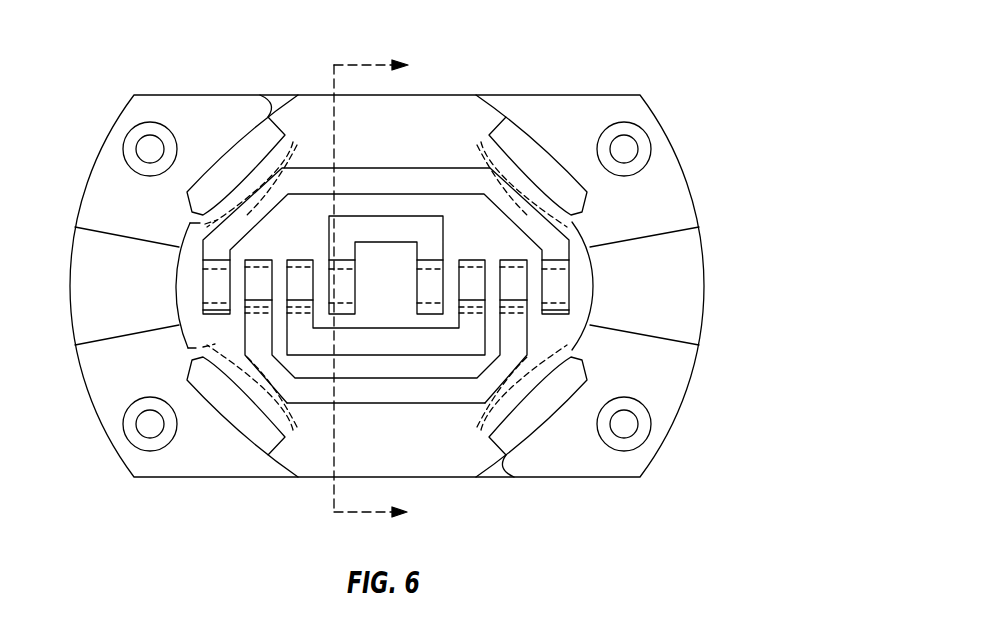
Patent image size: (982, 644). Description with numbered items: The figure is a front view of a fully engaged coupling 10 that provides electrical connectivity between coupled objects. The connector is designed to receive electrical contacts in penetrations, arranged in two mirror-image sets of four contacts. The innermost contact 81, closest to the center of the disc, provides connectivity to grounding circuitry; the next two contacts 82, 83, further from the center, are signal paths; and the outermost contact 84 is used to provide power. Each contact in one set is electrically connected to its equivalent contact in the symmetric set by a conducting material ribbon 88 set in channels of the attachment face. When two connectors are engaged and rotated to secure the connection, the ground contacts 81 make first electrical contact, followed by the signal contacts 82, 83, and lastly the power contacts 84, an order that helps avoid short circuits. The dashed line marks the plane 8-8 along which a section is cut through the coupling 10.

The coupling 10 is at (670, 72).
The section plane 8- 8 is at (379, 287).
The innermost contact 81 is at (423, 225).
The signal contact 82 is at (313, 395).
The signal contact 83 is at (265, 390).
The outermost contact 84 is at (283, 167).
The conducting material ribbon 88 is at (430, 403).